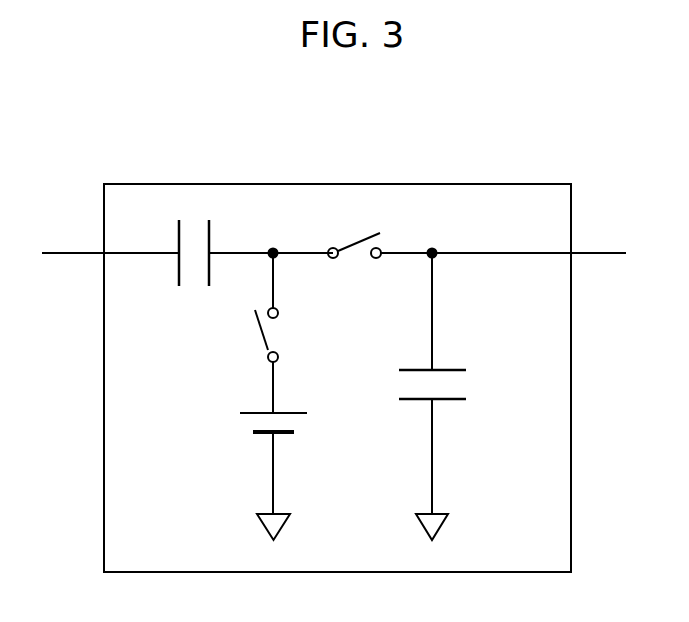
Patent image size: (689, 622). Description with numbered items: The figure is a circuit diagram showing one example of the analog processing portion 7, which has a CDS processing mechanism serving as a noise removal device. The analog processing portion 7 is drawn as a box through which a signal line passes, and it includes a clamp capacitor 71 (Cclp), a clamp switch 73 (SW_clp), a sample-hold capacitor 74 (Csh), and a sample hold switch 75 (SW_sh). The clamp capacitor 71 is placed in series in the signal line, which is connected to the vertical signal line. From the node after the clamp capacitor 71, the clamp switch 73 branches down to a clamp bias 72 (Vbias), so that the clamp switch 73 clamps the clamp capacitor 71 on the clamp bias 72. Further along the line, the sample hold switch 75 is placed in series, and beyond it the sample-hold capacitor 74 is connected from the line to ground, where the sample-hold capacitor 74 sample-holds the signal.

The analog processing portion 7 is at (513, 183).
The clamp capacitor 71 is at (194, 225).
The clamp bias 72 is at (247, 425).
The clamp switch 73 is at (260, 327).
The sample-hold capacitor 74 is at (408, 386).
The sample hold switch 75 is at (360, 240).